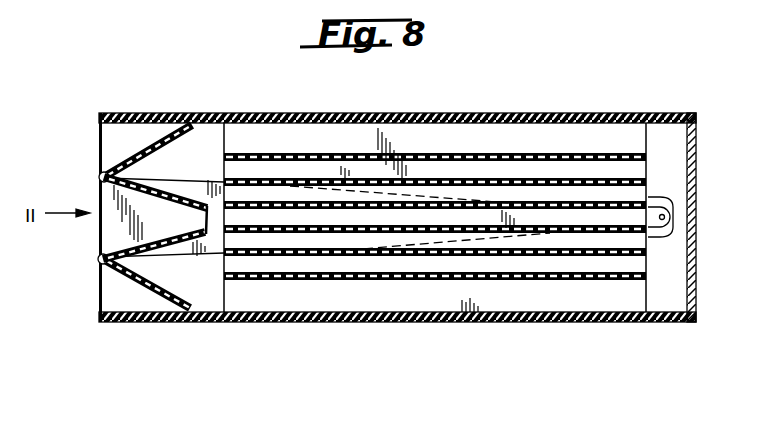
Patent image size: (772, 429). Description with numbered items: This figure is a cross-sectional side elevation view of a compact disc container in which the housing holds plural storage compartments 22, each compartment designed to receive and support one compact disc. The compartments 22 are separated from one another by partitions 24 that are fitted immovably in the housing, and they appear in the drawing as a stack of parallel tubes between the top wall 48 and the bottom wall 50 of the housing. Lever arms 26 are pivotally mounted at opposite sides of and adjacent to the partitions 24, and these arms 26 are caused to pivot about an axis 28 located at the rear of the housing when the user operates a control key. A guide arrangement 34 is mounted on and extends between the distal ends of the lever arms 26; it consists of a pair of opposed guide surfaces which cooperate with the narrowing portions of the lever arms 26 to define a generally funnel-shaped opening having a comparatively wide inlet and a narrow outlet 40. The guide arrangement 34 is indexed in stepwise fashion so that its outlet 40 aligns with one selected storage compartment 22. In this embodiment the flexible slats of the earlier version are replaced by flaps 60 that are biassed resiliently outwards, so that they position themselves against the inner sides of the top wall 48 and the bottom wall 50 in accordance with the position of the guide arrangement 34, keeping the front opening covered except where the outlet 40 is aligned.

The storage compartments 22 is at (322, 263).
The partitions 24 is at (431, 281).
The lever arms 26 is at (187, 187).
The axis 28 is at (668, 218).
The guide arrangement 34 is at (176, 260).
The outlet 40 is at (208, 222).
The top wall 48 is at (500, 113).
The bottom wall 50 is at (497, 321).
The flaps 60 is at (122, 158).